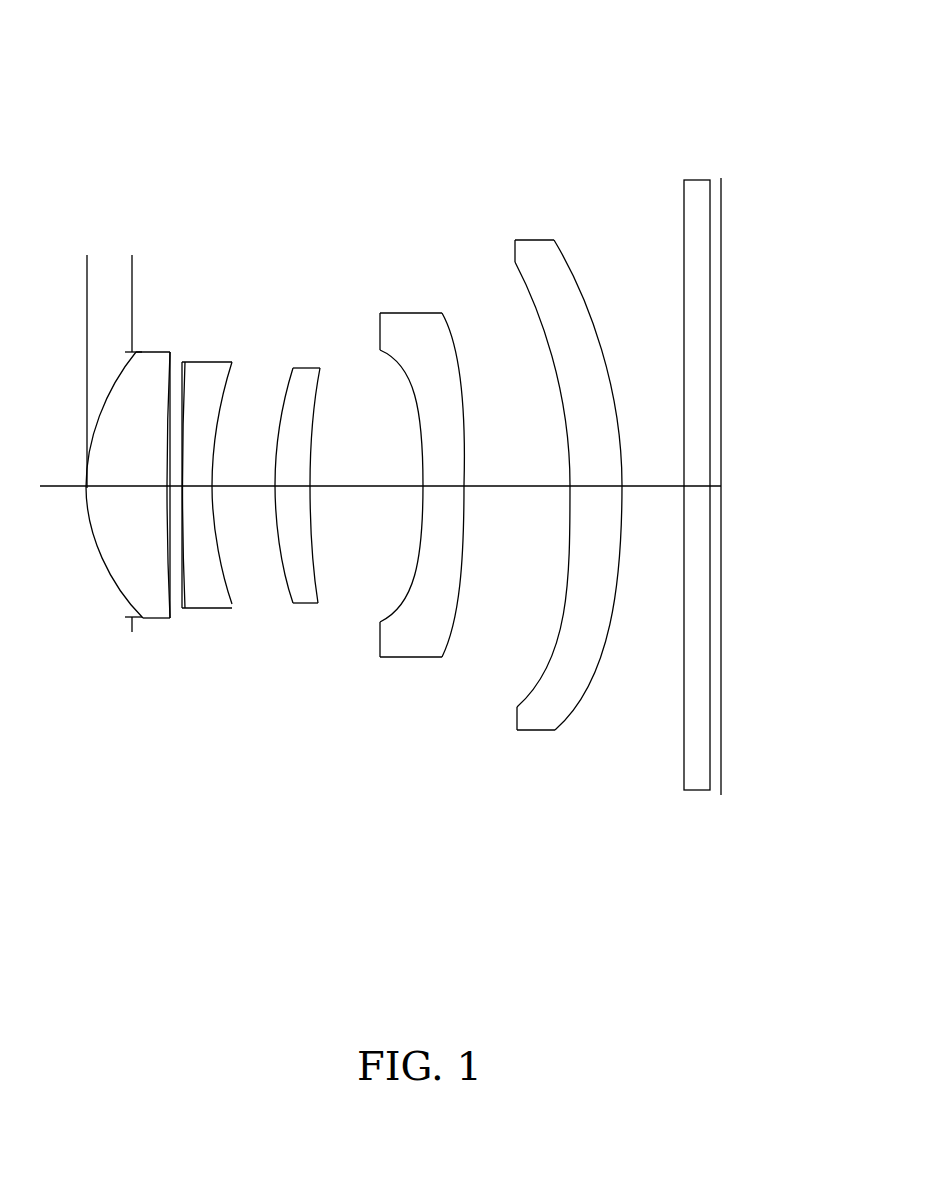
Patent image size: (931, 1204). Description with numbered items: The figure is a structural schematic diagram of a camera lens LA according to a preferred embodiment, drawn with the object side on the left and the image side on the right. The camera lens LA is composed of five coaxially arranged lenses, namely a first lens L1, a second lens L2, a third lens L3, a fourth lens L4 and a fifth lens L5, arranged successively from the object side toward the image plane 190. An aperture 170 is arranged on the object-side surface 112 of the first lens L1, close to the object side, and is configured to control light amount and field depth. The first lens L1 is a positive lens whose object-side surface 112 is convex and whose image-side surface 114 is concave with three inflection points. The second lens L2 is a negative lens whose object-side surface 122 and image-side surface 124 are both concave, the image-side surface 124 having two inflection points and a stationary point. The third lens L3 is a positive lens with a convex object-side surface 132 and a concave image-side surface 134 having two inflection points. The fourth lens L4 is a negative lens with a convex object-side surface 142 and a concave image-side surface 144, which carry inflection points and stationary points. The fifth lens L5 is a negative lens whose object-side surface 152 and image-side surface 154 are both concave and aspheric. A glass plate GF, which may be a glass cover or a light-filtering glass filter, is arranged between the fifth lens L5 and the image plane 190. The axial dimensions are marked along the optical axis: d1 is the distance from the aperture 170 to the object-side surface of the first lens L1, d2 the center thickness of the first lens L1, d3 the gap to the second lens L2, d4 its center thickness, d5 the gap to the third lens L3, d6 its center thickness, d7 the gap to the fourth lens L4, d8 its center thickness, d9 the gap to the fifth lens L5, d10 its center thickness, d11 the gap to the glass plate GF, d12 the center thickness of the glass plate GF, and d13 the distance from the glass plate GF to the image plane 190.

The camera lens LA is at (152, 117).
The aperture 170 is at (139, 352).
The first lens L1 is at (126, 572).
The object-side surface of the first lens 112 is at (106, 578).
The image-side surface of the first lens 114 is at (165, 527).
The second lens L2 is at (210, 577).
The object-side surface of the second lens 122 is at (182, 507).
The image-side surface of the second lens 124 is at (212, 453).
The third lens L3 is at (302, 588).
The object-side surface of the third lens 132 is at (277, 520).
The image-side surface of the third lens 134 is at (310, 475).
The fourth lens L4 is at (415, 560).
The object-side surface of the fourth lens 142 is at (413, 587).
The image-side surface of the fourth lens 144 is at (463, 563).
The fifth lens L5 is at (537, 585).
The object-side surface of the fifth lens 152 is at (550, 630).
The image-side surface of the fifth lens 154 is at (612, 634).
The glass plate GF is at (697, 485).
The image plane 190 is at (722, 698).
The axial distance from the aperture to the object-side surface of the first lens d1 is at (193, 295).
The center thickness of the first lens d2 is at (124, 470).
The axial distance from the first lens to the second lens d3 is at (176, 420).
The center thickness of the second lens d4 is at (196, 470).
The axial distance from the second lens to the third lens d5 is at (244, 470).
The center thickness of the third lens d6 is at (294, 470).
The axial distance from the third lens to the fourth lens d7 is at (372, 470).
The center thickness of the fourth lens d8 is at (444, 470).
The axial distance from the fourth lens to the fifth lens d9 is at (511, 470).
The center thickness of the fifth lens d10 is at (593, 470).
The axial distance from the fifth lens to the glass plate d11 is at (651, 470).
The center thickness of the glass plate d12 is at (696, 483).
The axial distance from the glass plate to the image plane d13 is at (713, 488).